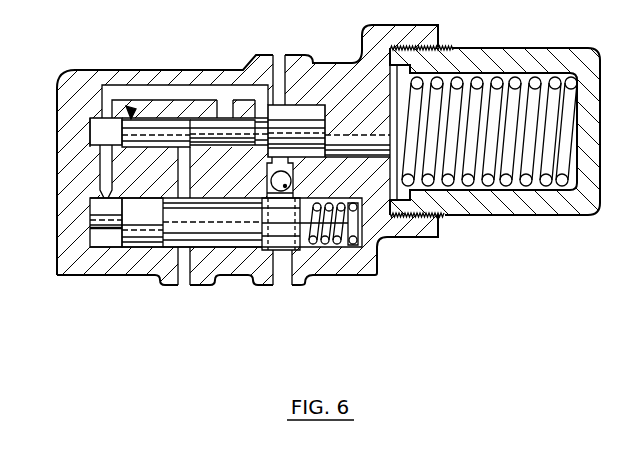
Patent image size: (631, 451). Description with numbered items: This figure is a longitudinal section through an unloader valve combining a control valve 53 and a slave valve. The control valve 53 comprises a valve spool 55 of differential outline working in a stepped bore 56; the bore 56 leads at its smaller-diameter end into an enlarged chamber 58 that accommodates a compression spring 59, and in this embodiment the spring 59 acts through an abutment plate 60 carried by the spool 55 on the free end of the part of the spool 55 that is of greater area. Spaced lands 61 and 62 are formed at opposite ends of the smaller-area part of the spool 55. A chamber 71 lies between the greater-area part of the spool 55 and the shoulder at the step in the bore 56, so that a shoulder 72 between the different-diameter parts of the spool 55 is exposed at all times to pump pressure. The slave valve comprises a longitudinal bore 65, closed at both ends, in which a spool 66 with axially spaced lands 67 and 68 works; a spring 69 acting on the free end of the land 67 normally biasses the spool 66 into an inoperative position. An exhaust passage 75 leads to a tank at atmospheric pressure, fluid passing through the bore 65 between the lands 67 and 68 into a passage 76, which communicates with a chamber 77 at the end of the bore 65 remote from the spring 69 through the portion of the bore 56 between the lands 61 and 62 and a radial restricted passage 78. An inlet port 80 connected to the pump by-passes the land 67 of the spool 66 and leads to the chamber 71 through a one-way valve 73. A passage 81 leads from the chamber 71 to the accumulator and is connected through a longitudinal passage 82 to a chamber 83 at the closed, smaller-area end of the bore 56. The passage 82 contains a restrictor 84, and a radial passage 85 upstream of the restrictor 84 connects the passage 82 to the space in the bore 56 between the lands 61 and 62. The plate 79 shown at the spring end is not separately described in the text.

The control valve 53 is at (131, 112).
The valve spool 55 is at (236, 128).
The stepped bore 56 is at (100, 125).
The enlarged chamber 58 is at (467, 72).
The compression spring 59 is at (516, 86).
The abutment plate 60 is at (447, 186).
The land 61 is at (311, 112).
The land 62 is at (172, 126).
The longitudinal bore 65 is at (350, 252).
The spool 66 is at (228, 245).
The land 67 is at (302, 252).
The land 68 is at (148, 230).
The spring 69 is at (358, 243).
The chamber 71 is at (333, 105).
The shoulder 72 is at (365, 45).
The one-way valve 73 is at (291, 173).
The exhaust passage 75 is at (184, 283).
The passage 76 is at (177, 167).
The chamber 77 is at (105, 238).
The radial restricted passage 78 is at (100, 193).
The spring seat plate 79 is at (393, 143).
The inlet port 80 is at (282, 268).
The passage 81 is at (283, 60).
The longitudinal passage 82 is at (153, 95).
The chamber 83 is at (97, 135).
The restrictor 84 is at (264, 72).
The radial passage 85 is at (227, 97).